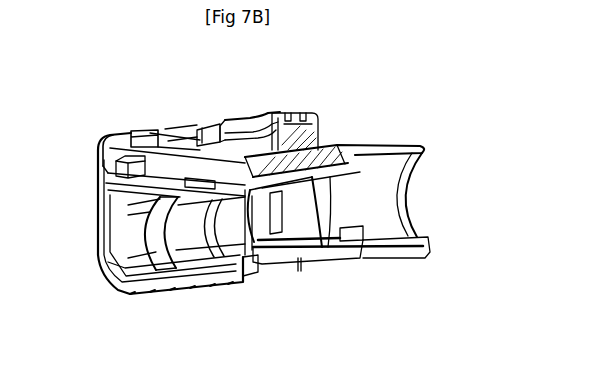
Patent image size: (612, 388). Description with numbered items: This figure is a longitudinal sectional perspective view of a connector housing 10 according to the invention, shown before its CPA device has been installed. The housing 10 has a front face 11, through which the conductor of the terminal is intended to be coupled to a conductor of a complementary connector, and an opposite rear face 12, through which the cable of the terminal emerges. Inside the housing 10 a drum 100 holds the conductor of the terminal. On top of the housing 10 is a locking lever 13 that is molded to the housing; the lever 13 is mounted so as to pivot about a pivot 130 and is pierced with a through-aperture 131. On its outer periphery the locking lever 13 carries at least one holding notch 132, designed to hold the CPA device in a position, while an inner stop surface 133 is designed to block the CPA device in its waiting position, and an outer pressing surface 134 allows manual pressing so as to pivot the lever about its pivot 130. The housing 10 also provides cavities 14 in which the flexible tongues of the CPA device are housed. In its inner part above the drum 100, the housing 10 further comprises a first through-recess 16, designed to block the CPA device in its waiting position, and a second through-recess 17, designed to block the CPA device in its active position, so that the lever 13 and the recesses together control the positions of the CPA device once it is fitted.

The housing 10 is at (398, 112).
The front face 11 is at (98, 256).
The rear face 12 is at (430, 249).
The locking lever 13 is at (128, 133).
The cavities 14 is at (122, 146).
The first through-recess 16 is at (247, 272).
The second through-recess 17 is at (148, 184).
The drum 100 is at (163, 258).
The pivot 130 is at (257, 116).
The through-aperture 131 is at (162, 158).
The holding notch 132 is at (203, 141).
The inner stop surface 133 is at (274, 131).
The outer pressing surface 134 is at (290, 112).